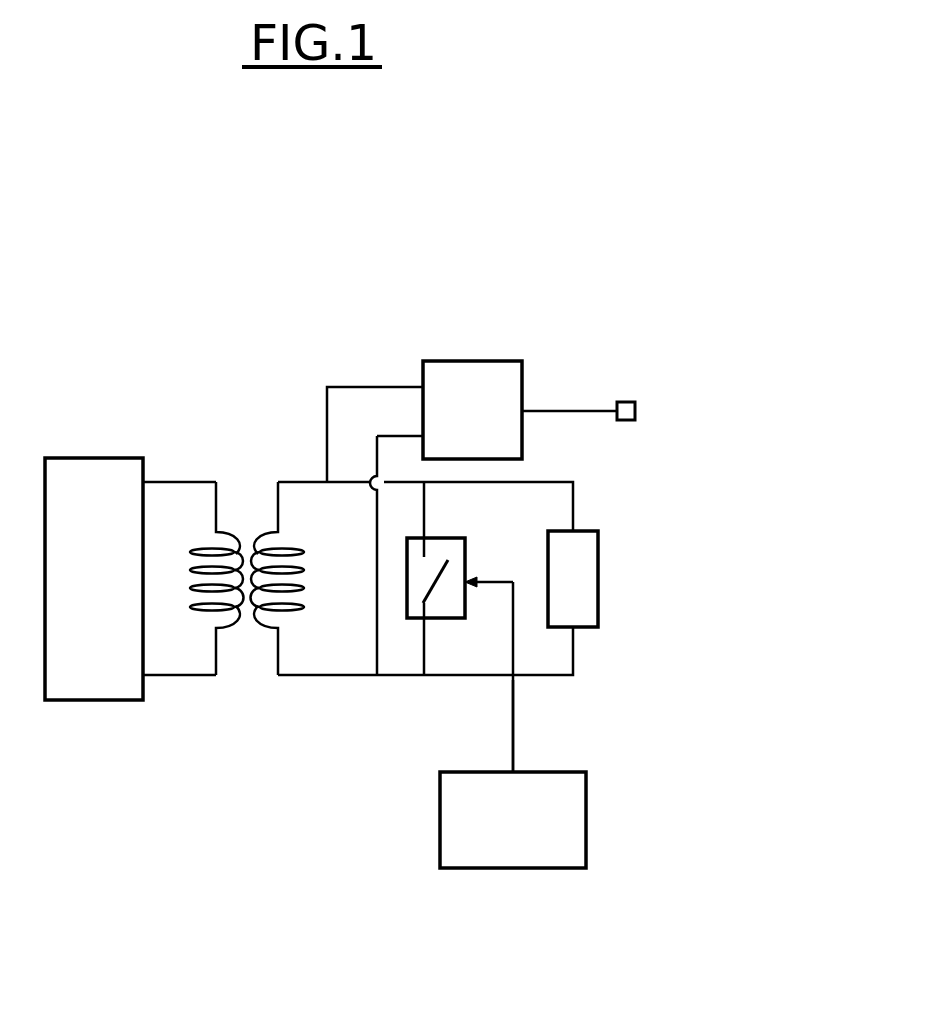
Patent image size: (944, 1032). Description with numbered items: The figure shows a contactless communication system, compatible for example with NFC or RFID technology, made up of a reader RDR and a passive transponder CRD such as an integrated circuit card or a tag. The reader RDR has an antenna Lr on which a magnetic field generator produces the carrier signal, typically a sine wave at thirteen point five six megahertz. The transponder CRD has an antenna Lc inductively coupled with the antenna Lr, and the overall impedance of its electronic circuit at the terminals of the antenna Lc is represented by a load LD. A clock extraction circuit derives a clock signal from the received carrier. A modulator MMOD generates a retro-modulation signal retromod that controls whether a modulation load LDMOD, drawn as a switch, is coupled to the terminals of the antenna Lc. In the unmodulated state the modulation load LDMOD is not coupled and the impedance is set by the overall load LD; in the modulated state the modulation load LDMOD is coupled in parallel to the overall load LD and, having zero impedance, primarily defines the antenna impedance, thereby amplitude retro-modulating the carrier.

The reader RDR is at (130, 579).
The antenna Lr is at (229, 530).
The antenna Lc is at (266, 530).
The passive transponder CRD is at (620, 301).
The load LD is at (573, 579).
The modulation load LDMOD is at (407, 580).
The retro-modulation signal retromod is at (516, 732).
The modulator MMOD is at (513, 820).